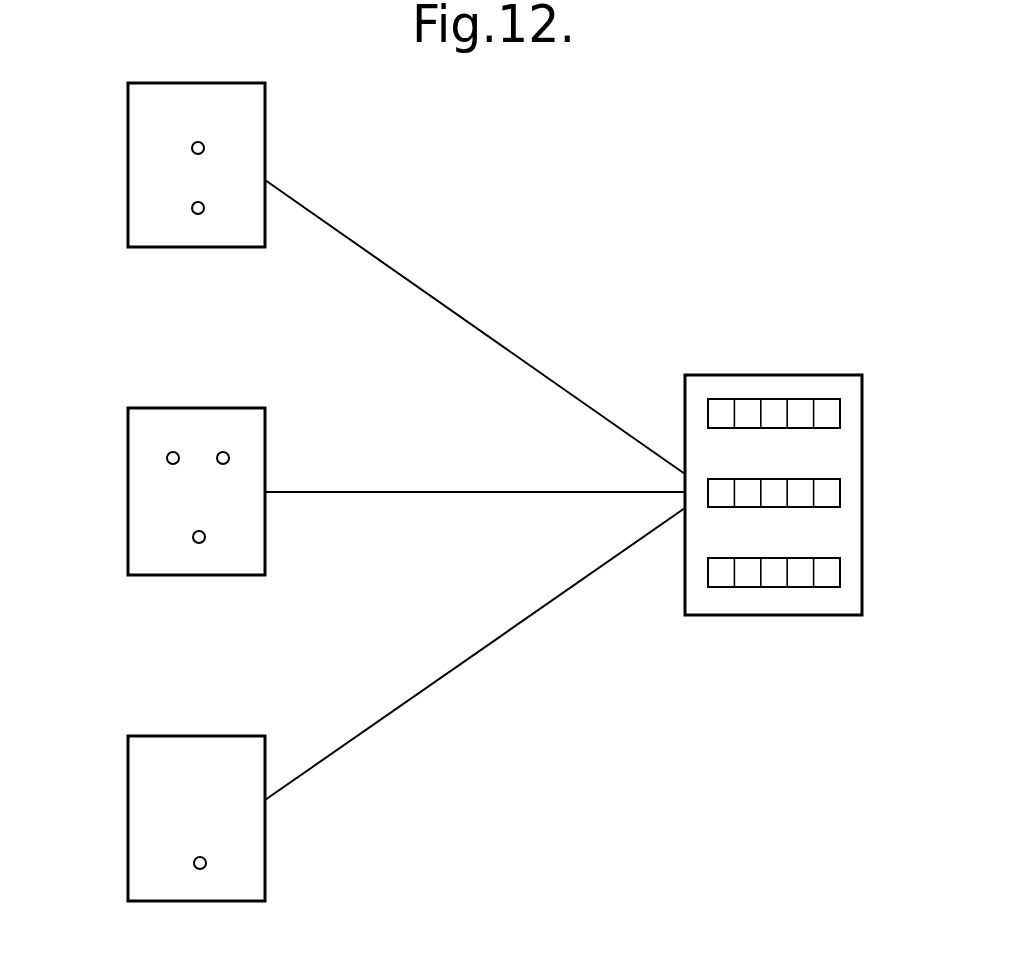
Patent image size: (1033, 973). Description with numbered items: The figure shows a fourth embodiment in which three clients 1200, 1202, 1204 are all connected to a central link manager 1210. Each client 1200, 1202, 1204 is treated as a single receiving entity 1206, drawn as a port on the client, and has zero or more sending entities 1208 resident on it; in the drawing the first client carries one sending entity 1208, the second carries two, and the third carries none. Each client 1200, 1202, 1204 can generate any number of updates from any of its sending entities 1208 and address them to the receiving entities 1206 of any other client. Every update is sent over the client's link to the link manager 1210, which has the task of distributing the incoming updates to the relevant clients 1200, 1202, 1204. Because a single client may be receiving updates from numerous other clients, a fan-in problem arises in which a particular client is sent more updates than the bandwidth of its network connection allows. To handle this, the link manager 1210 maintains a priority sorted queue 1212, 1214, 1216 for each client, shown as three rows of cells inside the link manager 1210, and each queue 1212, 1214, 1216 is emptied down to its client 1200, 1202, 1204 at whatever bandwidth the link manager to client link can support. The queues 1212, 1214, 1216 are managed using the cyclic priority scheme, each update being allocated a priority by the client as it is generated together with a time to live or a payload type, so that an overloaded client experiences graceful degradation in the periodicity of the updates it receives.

The client 1200 is at (128, 126).
The client 1202 is at (128, 472).
The client 1204 is at (128, 806).
The receiving entity 1206 is at (198, 215).
The sending entity 1208 is at (213, 148).
The link manager 1210 is at (740, 375).
The priority sorted queue 1212 is at (840, 410).
The priority sorted queue 1214 is at (840, 493).
The priority sorted queue 1216 is at (840, 578).